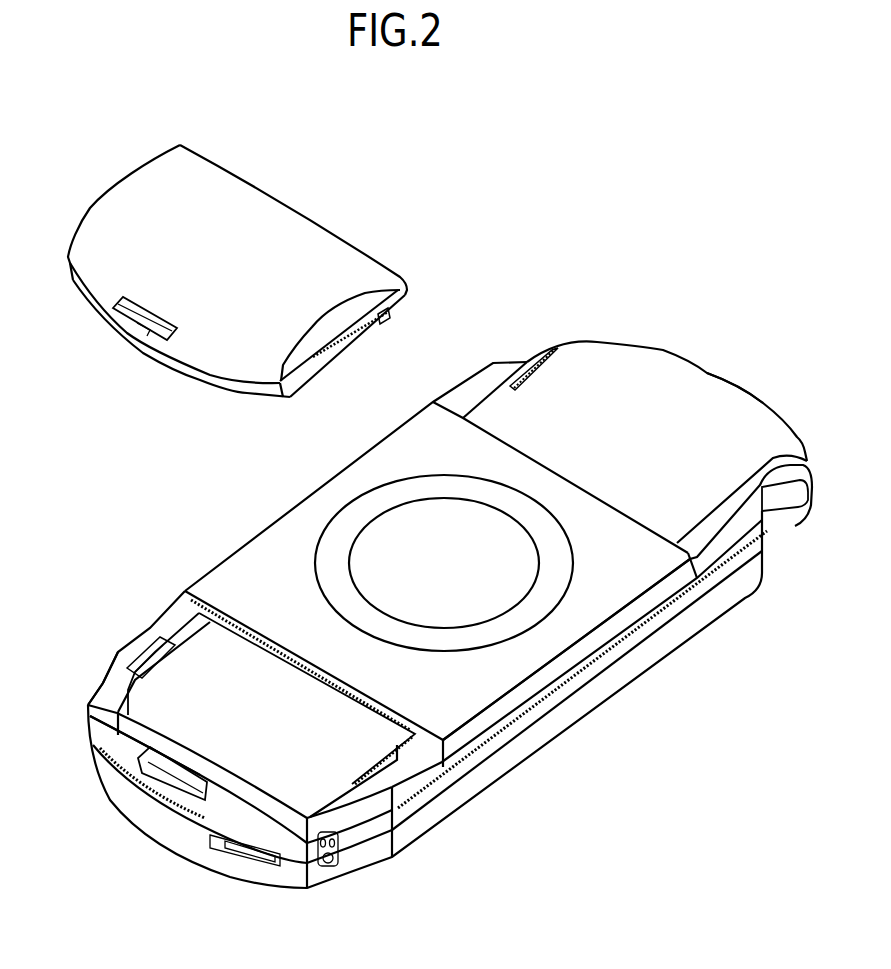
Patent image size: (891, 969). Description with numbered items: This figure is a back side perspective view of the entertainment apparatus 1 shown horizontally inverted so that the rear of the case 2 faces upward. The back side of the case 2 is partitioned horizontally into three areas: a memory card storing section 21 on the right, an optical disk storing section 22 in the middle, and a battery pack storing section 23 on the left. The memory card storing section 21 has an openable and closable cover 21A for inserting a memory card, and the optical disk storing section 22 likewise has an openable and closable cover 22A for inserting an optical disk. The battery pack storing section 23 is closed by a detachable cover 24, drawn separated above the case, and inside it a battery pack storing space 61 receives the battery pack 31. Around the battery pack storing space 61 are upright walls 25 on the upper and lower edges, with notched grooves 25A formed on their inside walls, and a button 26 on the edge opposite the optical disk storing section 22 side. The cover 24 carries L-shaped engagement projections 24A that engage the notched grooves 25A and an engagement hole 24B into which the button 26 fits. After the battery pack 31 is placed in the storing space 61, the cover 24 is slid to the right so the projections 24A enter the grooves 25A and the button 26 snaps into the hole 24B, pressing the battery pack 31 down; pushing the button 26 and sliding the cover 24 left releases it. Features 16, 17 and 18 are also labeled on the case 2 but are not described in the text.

The entertainment apparatus 1 is at (664, 180).
The case 2 is at (700, 595).
The hinge portion 16 is at (538, 355).
The front-left corner portion 17 is at (90, 680).
The slot 18 is at (782, 513).
The memory card storing section 21 is at (630, 360).
The cover 21A is at (710, 382).
The optical disk storing section 22 is at (553, 640).
The cover 22A is at (606, 605).
The battery pack storing section 23 is at (118, 558).
The cover 24 is at (216, 368).
The engagement projections 24A is at (392, 323).
The engagement hole 24B is at (137, 327).
The upright walls 25 is at (175, 603).
The notched grooves 25A is at (160, 635).
The button 26 is at (165, 772).
The battery pack 31 is at (250, 763).
The battery pack storing space 61 is at (133, 717).